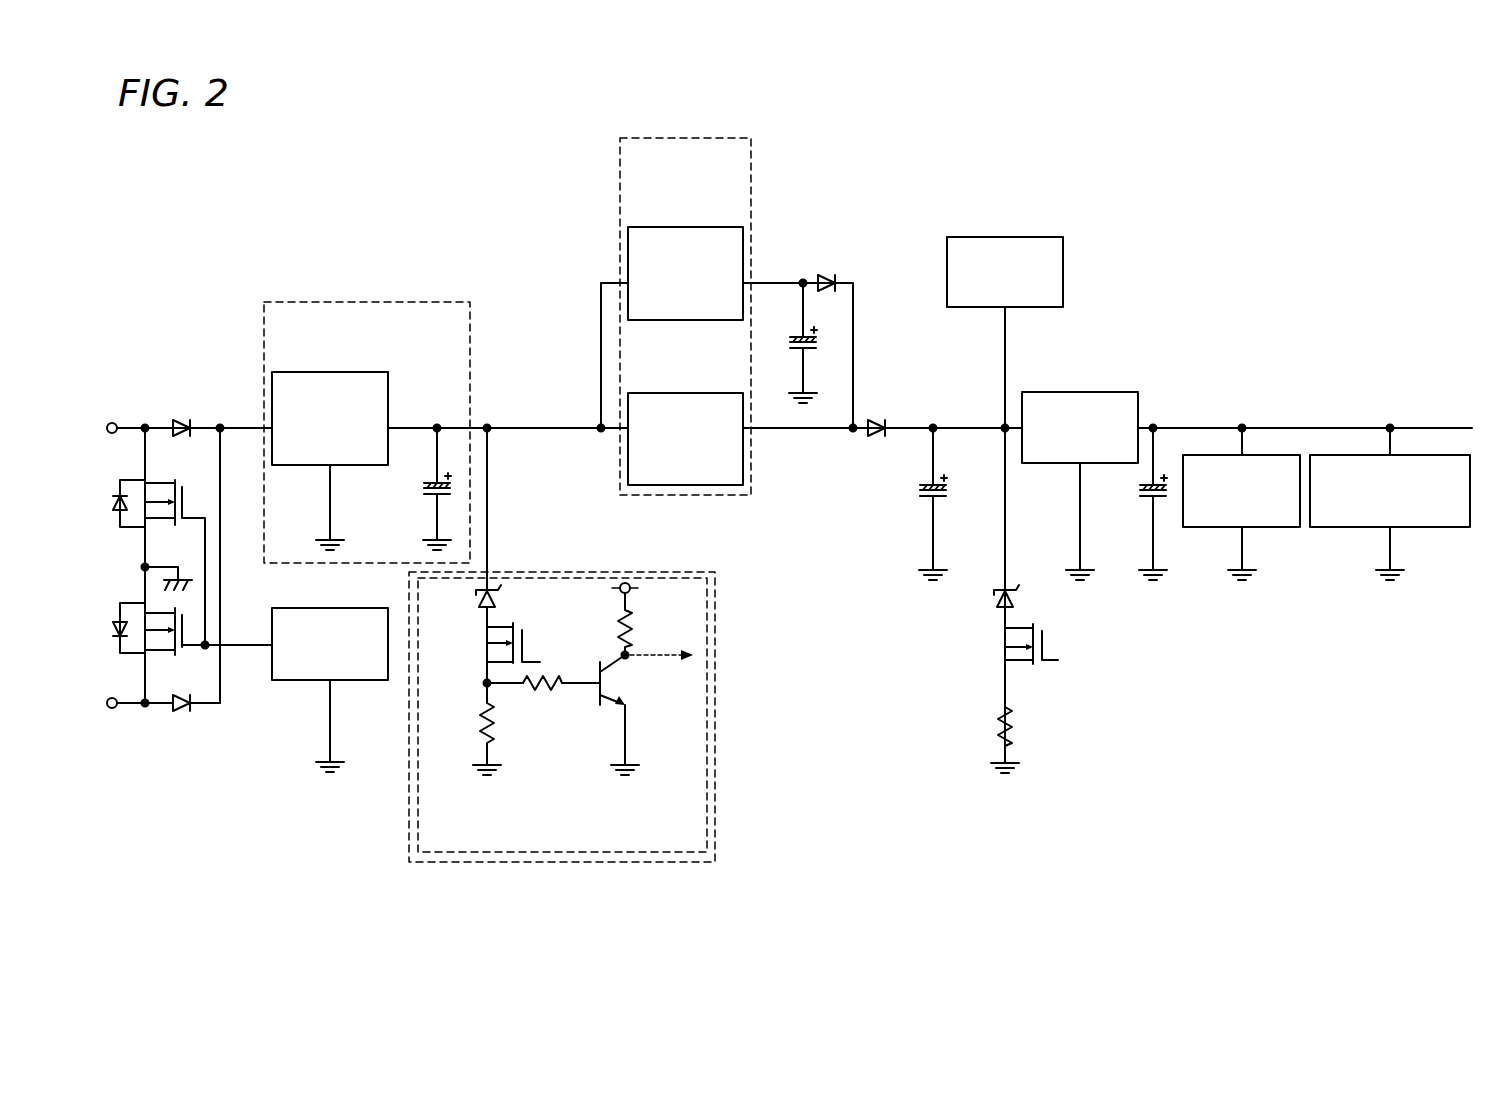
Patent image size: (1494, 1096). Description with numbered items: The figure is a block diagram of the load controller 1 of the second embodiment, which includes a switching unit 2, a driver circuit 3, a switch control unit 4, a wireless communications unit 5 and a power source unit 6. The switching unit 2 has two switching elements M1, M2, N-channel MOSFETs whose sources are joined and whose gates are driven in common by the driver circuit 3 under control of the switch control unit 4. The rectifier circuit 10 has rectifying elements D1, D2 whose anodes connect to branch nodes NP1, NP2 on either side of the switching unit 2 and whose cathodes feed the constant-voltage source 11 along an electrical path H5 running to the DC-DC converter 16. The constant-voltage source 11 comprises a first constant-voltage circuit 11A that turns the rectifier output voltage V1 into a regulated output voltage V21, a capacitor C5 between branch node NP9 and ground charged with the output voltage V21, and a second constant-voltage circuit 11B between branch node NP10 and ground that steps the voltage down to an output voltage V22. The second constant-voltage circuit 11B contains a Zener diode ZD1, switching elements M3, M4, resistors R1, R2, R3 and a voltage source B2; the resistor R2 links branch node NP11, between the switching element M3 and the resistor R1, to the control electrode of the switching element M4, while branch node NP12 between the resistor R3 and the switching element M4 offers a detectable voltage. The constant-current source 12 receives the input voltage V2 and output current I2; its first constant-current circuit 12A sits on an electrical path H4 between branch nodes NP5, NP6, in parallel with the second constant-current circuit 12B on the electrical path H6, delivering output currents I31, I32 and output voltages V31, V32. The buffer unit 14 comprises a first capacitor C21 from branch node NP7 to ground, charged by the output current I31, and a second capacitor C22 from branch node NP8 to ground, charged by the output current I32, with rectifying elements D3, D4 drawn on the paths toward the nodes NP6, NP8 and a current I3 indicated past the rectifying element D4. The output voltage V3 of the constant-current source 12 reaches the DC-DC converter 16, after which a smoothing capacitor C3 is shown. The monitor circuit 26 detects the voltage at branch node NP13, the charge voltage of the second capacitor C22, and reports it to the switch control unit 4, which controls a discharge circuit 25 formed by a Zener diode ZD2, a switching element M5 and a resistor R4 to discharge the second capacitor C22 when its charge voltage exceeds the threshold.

The load controller 1 is at (146, 360).
The switching unit 2 is at (139, 546).
The driver circuit 3 is at (357, 609).
The switch control unit 4 is at (1271, 528).
The wireless communications unit 5 is at (1439, 528).
The power source unit 6 is at (511, 189).
The rectifier circuit 10 is at (213, 380).
The constant-voltage source 11 is at (313, 301).
The first constant-voltage circuit 11A is at (305, 467).
The second constant-voltage circuit 11B is at (488, 863).
The constant-current source 12 is at (691, 136).
The first constant-current circuit 12A is at (655, 322).
The second constant-current circuit 12B is at (706, 392).
The buffer unit 14 is at (890, 504).
The DC-DC converter 16 is at (1079, 391).
The discharge circuit 25 is at (1042, 755).
The monitor circuit 26 is at (1005, 236).
The branch node NP1 is at (123, 414).
The branch node NP2 is at (123, 723).
The branch node NP5 is at (596, 443).
The branch node NP6 is at (857, 435).
The branch node NP7 is at (804, 280).
The branch node NP8 is at (935, 426).
The branch node NP9 is at (436, 426).
The branch node NP10 is at (489, 432).
The branch node NP11 is at (473, 685).
The branch node NP12 is at (615, 655).
The branch node NP13 is at (1003, 433).
The rectifying element D1 is at (198, 414).
The rectifying element D2 is at (182, 721).
The rectifying element D3 is at (846, 274).
The rectifying element D4 is at (880, 414).
The switching element M1 is at (159, 551).
The switching element M2 is at (192, 643).
The switching element M3 is at (495, 653).
The switching element M4 is at (630, 715).
The switching element M5 is at (1013, 665).
The Zener diode ZD1 is at (464, 527).
The Zener diode ZD2 is at (988, 528).
The resistor R1 is at (474, 729).
The resistor R2 is at (561, 699).
The resistor R3 is at (641, 624).
The resistor R4 is at (1021, 740).
The smoothing capacitor C3 is at (1137, 503).
The capacitor C5 is at (428, 489).
The first capacitor C21 is at (820, 343).
The second capacitor C22 is at (890, 504).
The voltage source B2 is at (607, 592).
The electrical path H4 is at (600, 343).
The electrical path H5 is at (237, 426).
The electrical path H6 is at (777, 426).
The output voltage V1 is at (245, 432).
The input voltage V2 is at (529, 426).
The output voltage V3 is at (912, 426).
The output voltage V21 is at (407, 432).
The output voltage V22 is at (489, 528).
The output voltage V31 is at (773, 290).
The output voltage V32 is at (775, 432).
The output current I2 is at (582, 425).
The current I3 is at (917, 443).
The output current I31 is at (787, 280).
The output current I32 is at (835, 442).